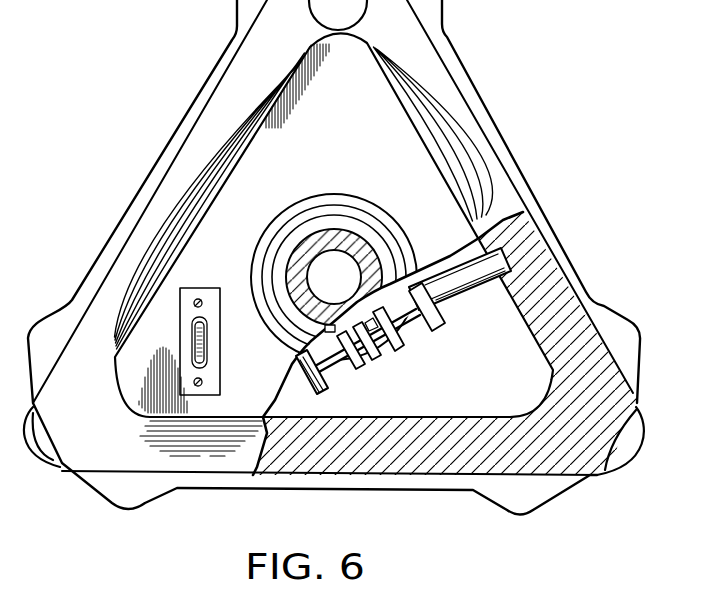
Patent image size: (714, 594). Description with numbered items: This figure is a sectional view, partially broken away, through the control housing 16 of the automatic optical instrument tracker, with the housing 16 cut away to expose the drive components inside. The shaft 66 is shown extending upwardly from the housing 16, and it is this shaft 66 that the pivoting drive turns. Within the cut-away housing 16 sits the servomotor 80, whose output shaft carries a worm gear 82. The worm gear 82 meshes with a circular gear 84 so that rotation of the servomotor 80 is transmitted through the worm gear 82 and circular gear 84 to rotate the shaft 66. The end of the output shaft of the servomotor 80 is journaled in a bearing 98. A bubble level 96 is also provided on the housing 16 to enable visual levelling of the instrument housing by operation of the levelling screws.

The control housing 16 is at (212, 133).
The shaft 66 is at (290, 280).
The bubble level 96 is at (180, 330).
The circular gear 84 is at (415, 272).
The servomotor 80 is at (493, 268).
The worm gear 82 is at (365, 348).
The bearing 98 is at (322, 388).